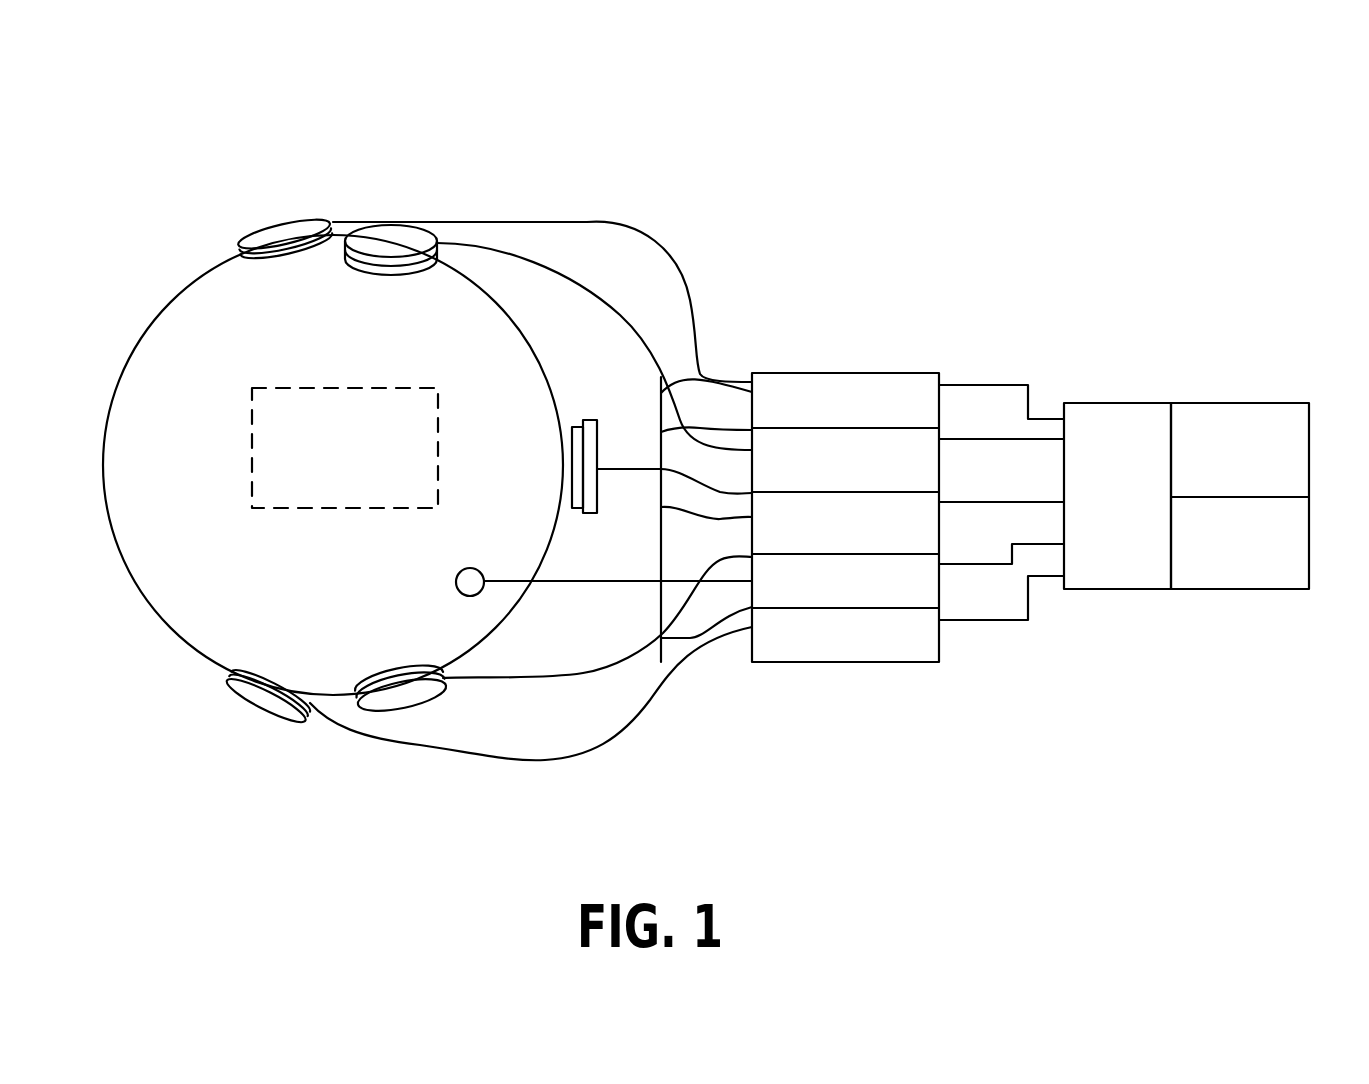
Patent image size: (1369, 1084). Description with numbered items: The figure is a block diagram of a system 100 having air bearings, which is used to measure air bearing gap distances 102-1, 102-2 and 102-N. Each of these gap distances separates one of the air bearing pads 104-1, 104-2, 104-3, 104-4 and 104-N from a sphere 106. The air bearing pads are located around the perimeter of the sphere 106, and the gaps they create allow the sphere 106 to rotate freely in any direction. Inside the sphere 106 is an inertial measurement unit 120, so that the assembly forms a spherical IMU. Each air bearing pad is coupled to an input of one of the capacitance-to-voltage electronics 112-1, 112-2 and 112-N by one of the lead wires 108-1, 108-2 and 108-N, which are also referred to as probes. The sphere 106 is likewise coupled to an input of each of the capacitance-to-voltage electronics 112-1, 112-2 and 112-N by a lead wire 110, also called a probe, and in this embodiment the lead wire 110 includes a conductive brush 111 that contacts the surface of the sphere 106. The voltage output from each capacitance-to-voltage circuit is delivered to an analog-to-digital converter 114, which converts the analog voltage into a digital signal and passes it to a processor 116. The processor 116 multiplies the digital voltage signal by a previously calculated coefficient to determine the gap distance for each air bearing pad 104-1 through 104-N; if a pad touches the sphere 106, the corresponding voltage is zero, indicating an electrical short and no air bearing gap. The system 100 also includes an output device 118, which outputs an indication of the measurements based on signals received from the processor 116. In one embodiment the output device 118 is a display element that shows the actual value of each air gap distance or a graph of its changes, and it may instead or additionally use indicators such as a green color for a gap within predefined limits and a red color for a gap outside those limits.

The system 100 is at (1052, 146).
The air bearing gap distance 102-1 is at (566, 398).
The air bearing gap distance 102-2 is at (368, 655).
The air bearing gap distance 102-N is at (296, 264).
The air bearing pad 104-1 is at (598, 452).
The air bearing pad 104-2 is at (430, 707).
The air bearing pad 104-3 is at (255, 705).
The air bearing pad 104-4 is at (392, 225).
The air bearing pad 104-N is at (289, 218).
The sphere 106 is at (128, 395).
The lead wire 108-1 is at (610, 476).
The lead wire 108-2 is at (523, 673).
The lead wire 108-N is at (690, 297).
The lead wire 110 is at (558, 580).
The conductive brush 111 is at (468, 567).
The capacitance-to-voltage electronics 112-1 is at (802, 372).
The capacitance-to-voltage electronics 112-2 is at (920, 526).
The capacitance-to-voltage electronics 112-N is at (928, 637).
The analog-to-digital converter 114 is at (1088, 402).
The processor 116 is at (1225, 402).
The output device 118 is at (1312, 575).
The inertial measurement unit 120 is at (406, 388).